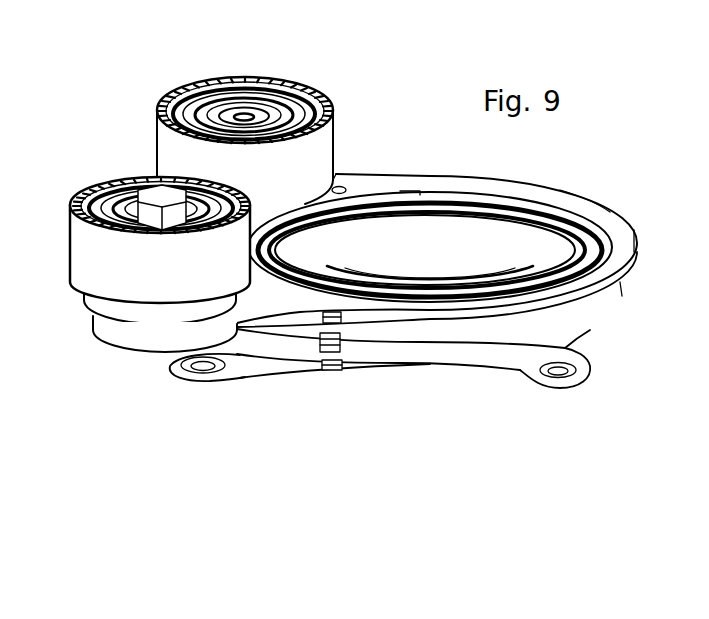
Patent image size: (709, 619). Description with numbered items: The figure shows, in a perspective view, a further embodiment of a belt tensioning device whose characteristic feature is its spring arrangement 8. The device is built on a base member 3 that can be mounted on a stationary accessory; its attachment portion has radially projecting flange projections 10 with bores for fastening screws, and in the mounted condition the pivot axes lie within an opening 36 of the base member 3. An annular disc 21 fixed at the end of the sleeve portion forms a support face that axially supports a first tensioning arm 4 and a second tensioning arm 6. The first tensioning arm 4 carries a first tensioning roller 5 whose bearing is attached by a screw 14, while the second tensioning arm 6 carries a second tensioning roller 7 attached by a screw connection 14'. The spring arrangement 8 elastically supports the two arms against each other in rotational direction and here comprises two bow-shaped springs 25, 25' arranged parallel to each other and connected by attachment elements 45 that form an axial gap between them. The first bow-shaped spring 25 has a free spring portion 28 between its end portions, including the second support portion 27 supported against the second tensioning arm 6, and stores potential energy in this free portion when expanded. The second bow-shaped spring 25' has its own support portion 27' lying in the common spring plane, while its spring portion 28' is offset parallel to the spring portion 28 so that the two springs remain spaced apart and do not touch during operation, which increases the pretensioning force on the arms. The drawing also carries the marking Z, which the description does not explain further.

The screw 14 is at (245, 86).
The screw connection 14' is at (160, 184).
The first tensioning roller 5 is at (328, 142).
The first tensioning arm 4 is at (347, 192).
The opening 36 is at (442, 232).
The annular disc 21 is at (497, 213).
The direction Z is at (594, 153).
The spring portion of the second bow-shaped spring 28' is at (609, 174).
The spring arrangement 8 is at (620, 205).
The second bow-shaped spring 25' is at (666, 236).
The bow-shaped spring 25 is at (652, 297).
The free spring portion 28 is at (459, 296).
The base member 3 is at (570, 350).
The flange projections 10 is at (512, 366).
The attachment elements 45 is at (335, 372).
The second tensioning arm 6 is at (230, 295).
The second support portion 27 is at (165, 359).
The support portion of the second bow-shaped spring 27' is at (136, 338).
The second tensioning roller 7 is at (88, 255).